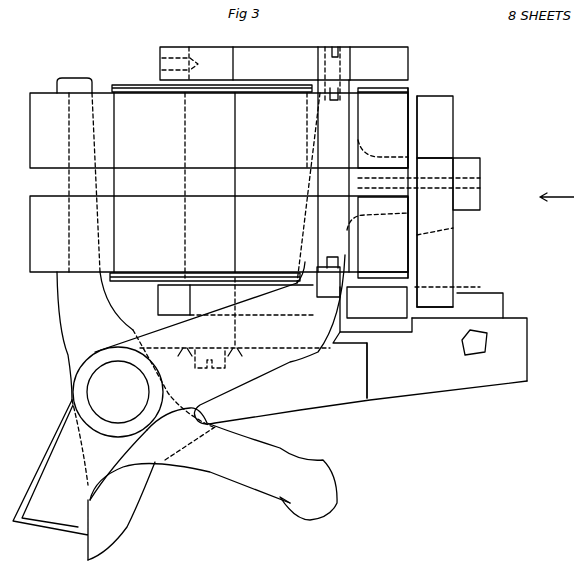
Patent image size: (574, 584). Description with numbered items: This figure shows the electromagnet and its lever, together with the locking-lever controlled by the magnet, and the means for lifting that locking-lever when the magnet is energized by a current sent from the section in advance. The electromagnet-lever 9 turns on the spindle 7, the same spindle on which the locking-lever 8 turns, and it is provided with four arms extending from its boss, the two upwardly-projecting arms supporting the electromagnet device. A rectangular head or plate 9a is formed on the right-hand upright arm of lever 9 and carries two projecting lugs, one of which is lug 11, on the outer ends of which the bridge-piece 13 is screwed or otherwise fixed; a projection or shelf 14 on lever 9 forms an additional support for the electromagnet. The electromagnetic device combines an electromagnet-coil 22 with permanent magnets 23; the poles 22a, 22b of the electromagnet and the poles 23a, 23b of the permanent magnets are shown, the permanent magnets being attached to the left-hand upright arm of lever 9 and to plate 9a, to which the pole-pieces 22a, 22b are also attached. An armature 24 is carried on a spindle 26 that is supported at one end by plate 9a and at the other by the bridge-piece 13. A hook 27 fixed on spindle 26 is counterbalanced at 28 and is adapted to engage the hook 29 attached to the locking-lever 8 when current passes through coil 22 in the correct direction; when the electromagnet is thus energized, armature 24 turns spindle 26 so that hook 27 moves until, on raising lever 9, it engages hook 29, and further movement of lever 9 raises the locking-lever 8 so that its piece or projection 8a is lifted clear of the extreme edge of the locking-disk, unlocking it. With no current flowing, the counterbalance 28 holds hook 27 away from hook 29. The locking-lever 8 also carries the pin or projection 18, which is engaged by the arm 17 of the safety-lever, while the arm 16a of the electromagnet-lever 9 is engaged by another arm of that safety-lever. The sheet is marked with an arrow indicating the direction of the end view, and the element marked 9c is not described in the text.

The spindle 7 is at (118, 392).
The locking-lever 8 is at (520, 345).
The piece or projection 8a is at (378, 370).
The electromagnet-lever 9 is at (305, 366).
The rectangular head or plate 9a is at (323, 188).
The arm bolt 9c is at (343, 73).
The projecting lug 11 is at (440, 167).
The bridge-piece 13 is at (470, 168).
The projection or shelf 14 is at (235, 323).
The arm of the electromagnet-lever 16a is at (303, 467).
The arm or projection 17 is at (480, 305).
The pin or projection 18 is at (480, 337).
The electromagnet-coil 22 is at (129, 87).
The pole of the electromagnet 22a is at (393, 59).
The pole of the electromagnet 22b is at (376, 309).
The permanent magnets 23 is at (219, 185).
The pole of the permanent magnets 23a is at (383, 128).
The pole of the permanent magnets 23b is at (377, 237).
The armature 24 is at (398, 92).
The spindle 26 is at (445, 185).
The hook 27 is at (440, 300).
The counterbalance 28 is at (445, 118).
The hook 29 is at (453, 246).